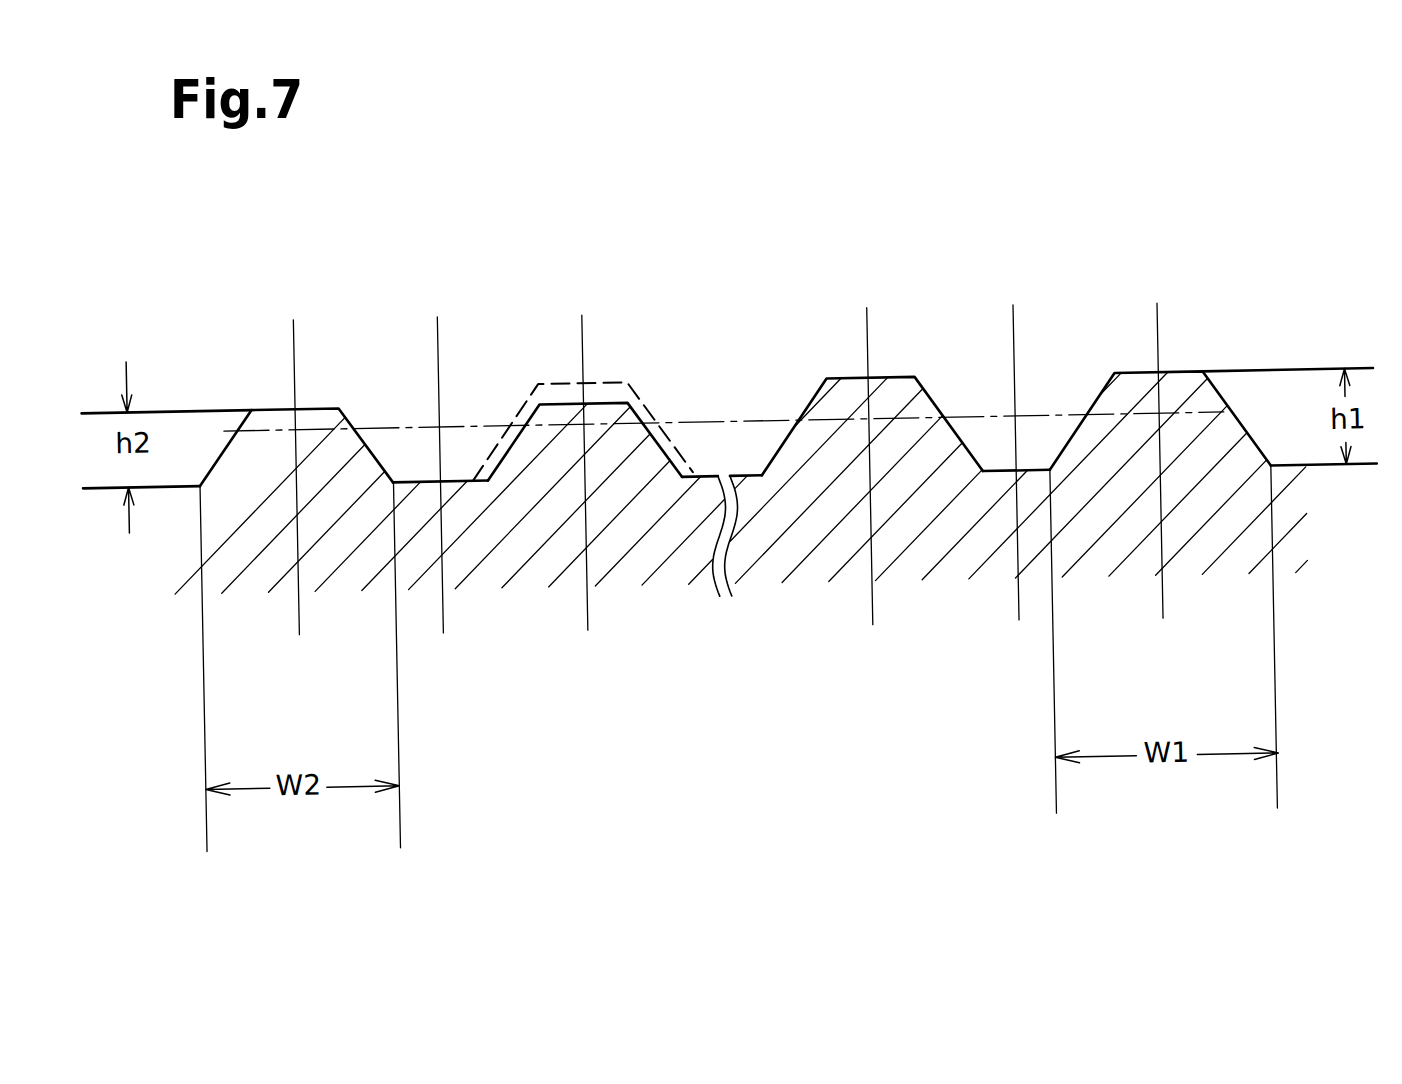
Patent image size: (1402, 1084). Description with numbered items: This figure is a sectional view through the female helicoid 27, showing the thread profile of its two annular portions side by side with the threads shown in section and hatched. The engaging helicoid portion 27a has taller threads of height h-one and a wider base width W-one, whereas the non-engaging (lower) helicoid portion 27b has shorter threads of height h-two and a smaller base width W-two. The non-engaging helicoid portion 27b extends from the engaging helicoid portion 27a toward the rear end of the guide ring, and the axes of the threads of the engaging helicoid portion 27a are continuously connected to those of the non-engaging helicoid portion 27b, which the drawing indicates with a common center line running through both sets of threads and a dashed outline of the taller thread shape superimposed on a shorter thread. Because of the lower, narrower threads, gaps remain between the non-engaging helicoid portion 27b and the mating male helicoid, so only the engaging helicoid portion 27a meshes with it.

The female helicoid 27 is at (545, 305).
The engaging helicoid portion 27a is at (638, 399).
The non-engaging helicoid portion 27b is at (319, 413).